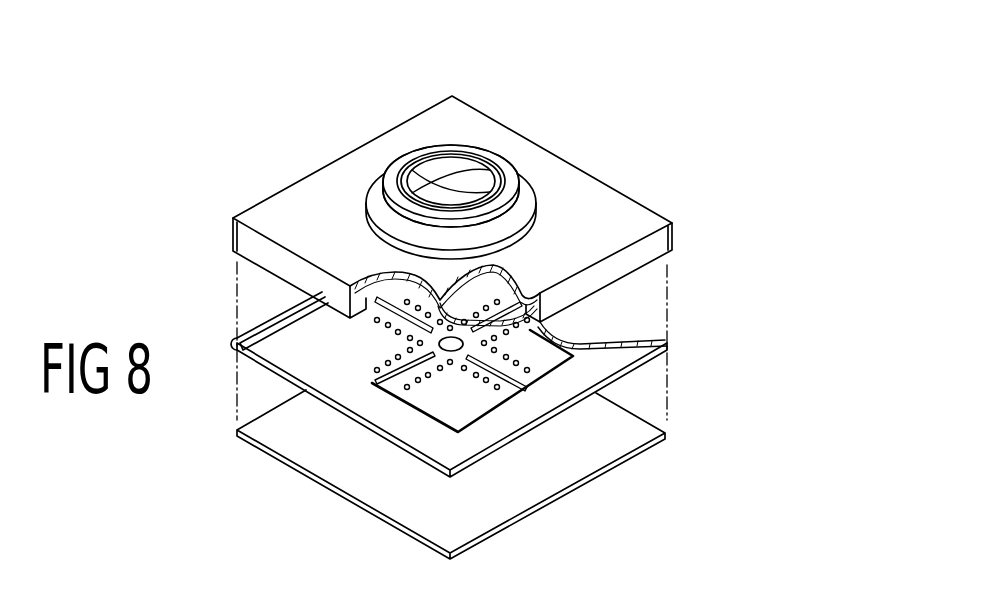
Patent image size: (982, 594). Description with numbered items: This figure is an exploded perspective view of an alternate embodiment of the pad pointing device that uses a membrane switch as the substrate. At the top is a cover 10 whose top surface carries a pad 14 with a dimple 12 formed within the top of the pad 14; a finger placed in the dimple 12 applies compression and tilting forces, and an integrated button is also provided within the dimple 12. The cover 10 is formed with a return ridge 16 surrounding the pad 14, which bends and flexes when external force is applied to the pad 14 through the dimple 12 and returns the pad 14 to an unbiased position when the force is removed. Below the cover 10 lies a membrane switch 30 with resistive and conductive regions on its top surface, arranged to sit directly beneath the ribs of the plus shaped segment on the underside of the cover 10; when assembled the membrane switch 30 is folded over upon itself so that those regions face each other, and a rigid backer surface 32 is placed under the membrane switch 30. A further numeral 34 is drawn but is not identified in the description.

The cover 10 is at (235, 298).
The dimple 12 is at (460, 163).
The pad 14 is at (422, 145).
The return ridge 16 is at (525, 218).
The membrane switch 30 is at (637, 363).
The rigid backer surface 32 is at (327, 487).
The base plate 34 is at (520, 582).